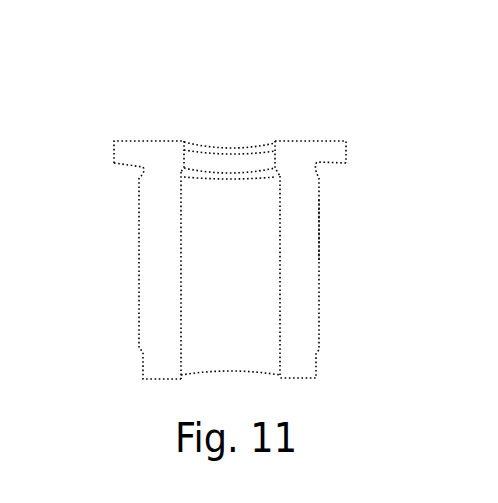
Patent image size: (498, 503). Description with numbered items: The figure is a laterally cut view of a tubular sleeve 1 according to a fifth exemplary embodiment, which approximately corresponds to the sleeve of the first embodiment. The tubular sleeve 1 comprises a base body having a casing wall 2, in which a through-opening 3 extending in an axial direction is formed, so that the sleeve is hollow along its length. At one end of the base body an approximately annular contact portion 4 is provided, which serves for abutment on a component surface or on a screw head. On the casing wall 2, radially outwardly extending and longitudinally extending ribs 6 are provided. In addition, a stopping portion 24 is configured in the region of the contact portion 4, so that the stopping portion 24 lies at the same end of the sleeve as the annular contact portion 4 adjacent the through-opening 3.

The tubular sleeve 1 is at (367, 87).
The casing wall 2 is at (319, 320).
The through-opening 3 is at (203, 348).
The contact portion 4 is at (127, 150).
The ribs 6 is at (319, 225).
The stopping portion 24 is at (175, 158).